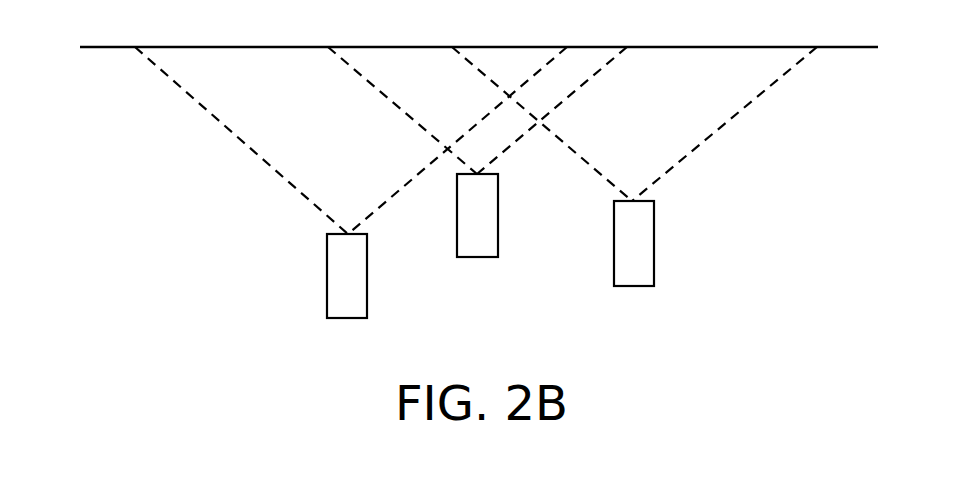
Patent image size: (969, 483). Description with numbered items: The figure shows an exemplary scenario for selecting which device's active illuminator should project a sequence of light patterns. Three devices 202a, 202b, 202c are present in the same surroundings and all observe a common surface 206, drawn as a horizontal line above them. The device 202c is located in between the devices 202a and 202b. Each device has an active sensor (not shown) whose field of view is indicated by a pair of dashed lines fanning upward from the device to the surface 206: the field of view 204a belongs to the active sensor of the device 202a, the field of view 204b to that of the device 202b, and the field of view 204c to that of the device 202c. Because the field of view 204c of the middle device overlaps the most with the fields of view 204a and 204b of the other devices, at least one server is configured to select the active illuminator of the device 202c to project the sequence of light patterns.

The surface 206 is at (217, 47).
The device 202a is at (327, 280).
The device 202b is at (654, 245).
The device 202c is at (478, 257).
The field of view 204a is at (163, 131).
The field of view 204b is at (791, 117).
The field of view 204c is at (536, 158).